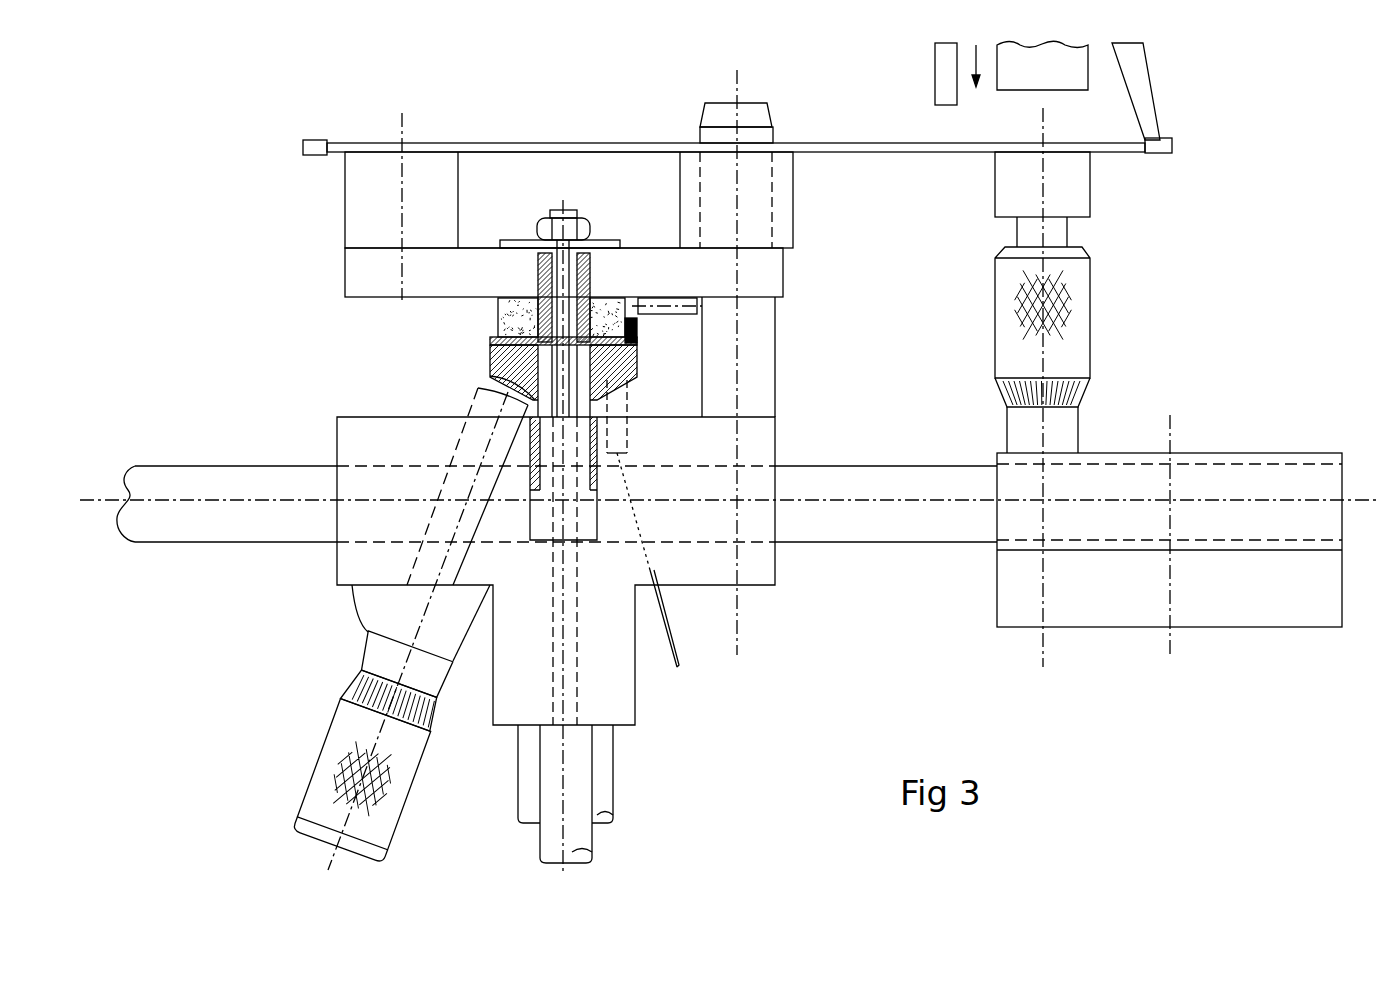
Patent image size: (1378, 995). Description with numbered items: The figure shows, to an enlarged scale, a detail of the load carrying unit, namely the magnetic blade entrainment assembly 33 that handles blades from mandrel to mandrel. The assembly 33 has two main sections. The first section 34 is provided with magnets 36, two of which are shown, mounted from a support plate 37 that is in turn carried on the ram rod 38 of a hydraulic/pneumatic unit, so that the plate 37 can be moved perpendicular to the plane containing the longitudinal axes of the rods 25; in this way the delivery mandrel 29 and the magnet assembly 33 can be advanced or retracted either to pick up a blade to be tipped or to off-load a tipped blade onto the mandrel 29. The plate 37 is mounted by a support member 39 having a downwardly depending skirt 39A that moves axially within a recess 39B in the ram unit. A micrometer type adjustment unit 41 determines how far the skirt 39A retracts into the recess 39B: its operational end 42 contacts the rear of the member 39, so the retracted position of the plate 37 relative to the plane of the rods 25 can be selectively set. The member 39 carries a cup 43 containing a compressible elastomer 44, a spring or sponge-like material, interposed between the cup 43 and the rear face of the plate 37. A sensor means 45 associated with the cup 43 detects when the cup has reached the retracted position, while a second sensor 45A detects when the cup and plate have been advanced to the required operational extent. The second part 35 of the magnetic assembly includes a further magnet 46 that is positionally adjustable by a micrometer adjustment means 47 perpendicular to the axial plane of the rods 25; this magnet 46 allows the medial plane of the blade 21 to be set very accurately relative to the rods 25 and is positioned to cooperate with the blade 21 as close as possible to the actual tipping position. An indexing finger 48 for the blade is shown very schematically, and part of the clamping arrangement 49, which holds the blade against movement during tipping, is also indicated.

The blade 21 is at (576, 143).
The rods 25 is at (848, 487).
The delivery mandrel 29 is at (748, 115).
The magnetic blade entrainment assembly 33 is at (988, 552).
The first section 34 is at (340, 272).
The second part 35 is at (1213, 453).
The magnets 36 is at (433, 197).
The support plate 37 is at (467, 270).
The ram rod 38 is at (578, 797).
The support member 39 is at (484, 359).
The skirt 39A is at (527, 395).
The recess 39B is at (585, 525).
The micrometer type adjustment unit 41 is at (380, 650).
The operational end 42 is at (483, 408).
The cup 43 is at (495, 326).
The compressible elastomer 44 is at (628, 332).
The sensor means 45 is at (626, 412).
The second sensor 45A is at (695, 310).
The further magnet 46 is at (1067, 185).
The micrometer adjustment means 47 is at (1070, 335).
The indexing finger 48 is at (1142, 88).
The clamping arrangement 49 is at (1035, 70).